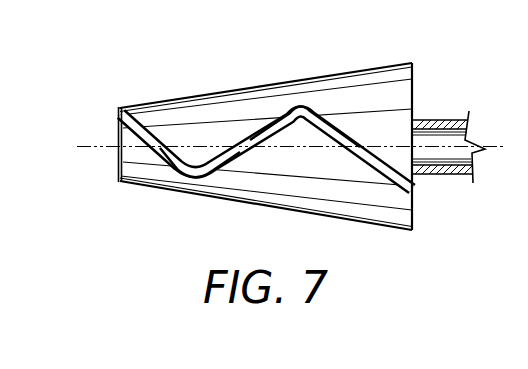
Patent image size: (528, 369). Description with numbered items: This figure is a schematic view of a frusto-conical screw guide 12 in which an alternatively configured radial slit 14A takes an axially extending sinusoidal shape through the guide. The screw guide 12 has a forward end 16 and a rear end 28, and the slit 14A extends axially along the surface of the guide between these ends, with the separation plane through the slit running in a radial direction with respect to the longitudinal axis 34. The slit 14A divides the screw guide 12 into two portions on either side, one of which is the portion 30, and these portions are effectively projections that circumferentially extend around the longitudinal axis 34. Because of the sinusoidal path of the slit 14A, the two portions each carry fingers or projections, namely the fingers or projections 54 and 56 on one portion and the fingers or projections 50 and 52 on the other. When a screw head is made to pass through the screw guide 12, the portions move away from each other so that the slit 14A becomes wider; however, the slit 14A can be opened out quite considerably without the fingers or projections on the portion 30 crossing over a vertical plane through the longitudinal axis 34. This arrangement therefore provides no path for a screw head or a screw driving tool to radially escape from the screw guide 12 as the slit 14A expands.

The screw guide 12 is at (385, 66).
The radial slit 14A is at (240, 137).
The forward end 16 is at (118, 150).
The rear end 28 is at (412, 208).
The portion 30 is at (307, 187).
The longitudinal axis 34 is at (98, 143).
The finger or projection 50 is at (119, 180).
The finger or projection 52 is at (295, 123).
The finger or projection 54 is at (198, 160).
The finger or projection 56 is at (380, 140).